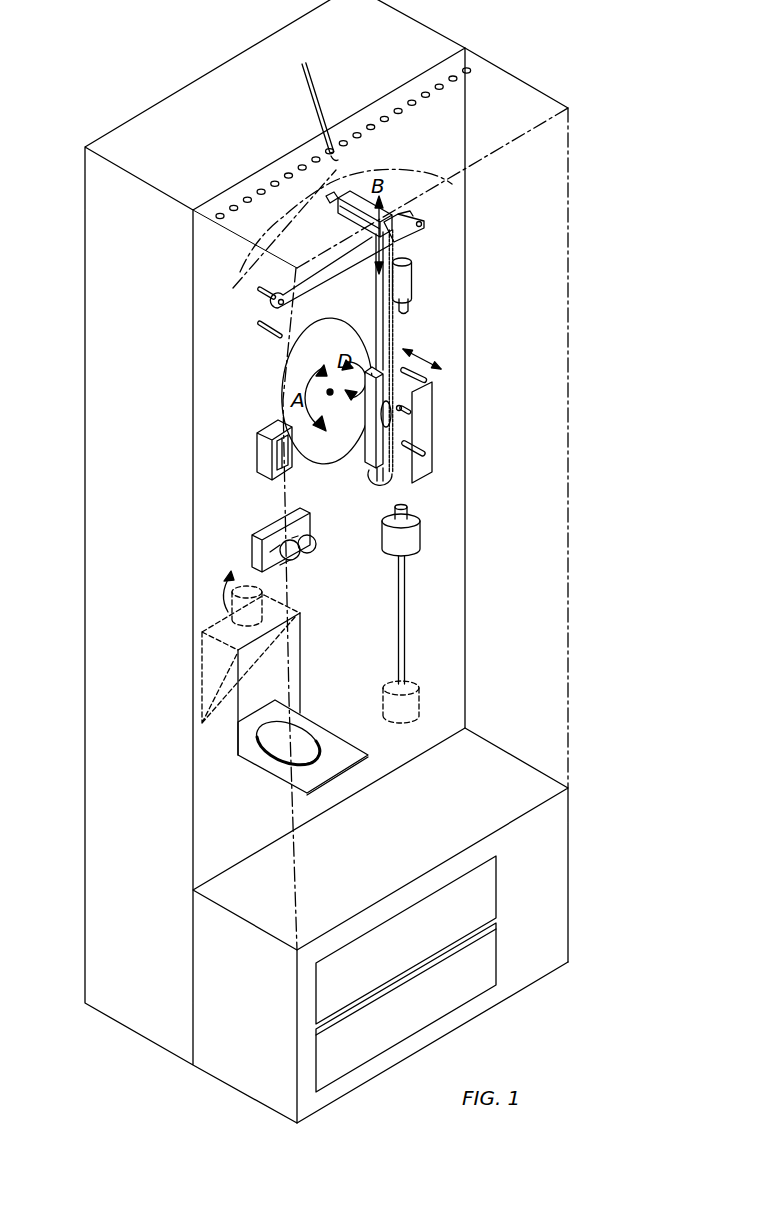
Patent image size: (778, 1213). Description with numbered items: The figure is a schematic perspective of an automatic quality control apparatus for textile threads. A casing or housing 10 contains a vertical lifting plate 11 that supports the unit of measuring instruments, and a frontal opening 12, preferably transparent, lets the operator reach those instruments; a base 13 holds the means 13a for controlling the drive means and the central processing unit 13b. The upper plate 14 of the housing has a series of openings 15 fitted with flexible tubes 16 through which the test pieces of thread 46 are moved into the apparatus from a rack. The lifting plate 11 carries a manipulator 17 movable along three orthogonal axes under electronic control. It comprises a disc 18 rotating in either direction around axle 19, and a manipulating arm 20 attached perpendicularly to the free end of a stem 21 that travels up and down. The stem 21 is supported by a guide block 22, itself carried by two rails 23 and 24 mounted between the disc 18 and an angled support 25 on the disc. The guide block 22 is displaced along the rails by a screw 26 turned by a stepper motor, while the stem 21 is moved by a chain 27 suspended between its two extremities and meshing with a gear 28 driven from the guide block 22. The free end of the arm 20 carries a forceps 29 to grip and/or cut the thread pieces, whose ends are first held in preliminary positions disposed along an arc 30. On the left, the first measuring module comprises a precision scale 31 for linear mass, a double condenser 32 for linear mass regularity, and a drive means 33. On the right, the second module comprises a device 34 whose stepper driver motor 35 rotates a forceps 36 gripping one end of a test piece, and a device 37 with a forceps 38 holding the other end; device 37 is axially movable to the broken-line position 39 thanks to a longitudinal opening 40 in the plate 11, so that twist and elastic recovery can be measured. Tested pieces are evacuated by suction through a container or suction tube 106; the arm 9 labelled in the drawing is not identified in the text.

The housing 10 is at (530, 77).
The vertical lifting plate 11 is at (149, 117).
The frontal opening 12 is at (566, 222).
The base 13 is at (408, 925).
The means for controlling the drive means 13a is at (487, 944).
The central processing unit 13b is at (487, 878).
The upper plate 14 is at (396, 88).
The openings 15 is at (438, 90).
The flexible tubes 16 is at (312, 108).
The manipulator 17 is at (454, 405).
The disc 18 is at (293, 378).
The axle 19 is at (330, 390).
The manipulating arm 20 is at (358, 241).
The stem 21 is at (376, 306).
The guide block 22 is at (371, 464).
The rail 23 is at (427, 374).
The rail 24 is at (410, 442).
The angled support 25 is at (427, 408).
The screw 26 is at (410, 418).
The chain 27 is at (396, 325).
The gear 28 is at (366, 432).
The forceps 29 is at (346, 220).
The arc 30 is at (236, 285).
The precision scale 31 is at (326, 720).
The double condenser 32 is at (258, 442).
The drive means 33 is at (260, 534).
The device 34 is at (447, 280).
The stepper driver motor 35 is at (402, 262).
The forceps 36 is at (406, 306).
The device 37 is at (388, 541).
The forceps 38 is at (394, 512).
The position 39 is at (418, 691).
The longitudinal opening 40 is at (400, 622).
The test pieces of thread 46 is at (333, 163).
The suction tube 106 is at (208, 678).
The arm 9 is at (306, 289).